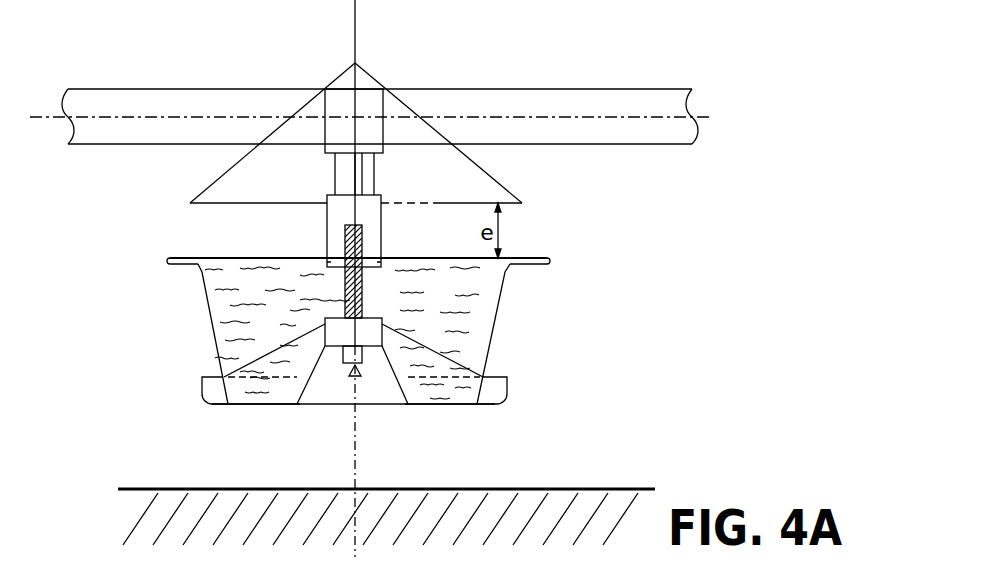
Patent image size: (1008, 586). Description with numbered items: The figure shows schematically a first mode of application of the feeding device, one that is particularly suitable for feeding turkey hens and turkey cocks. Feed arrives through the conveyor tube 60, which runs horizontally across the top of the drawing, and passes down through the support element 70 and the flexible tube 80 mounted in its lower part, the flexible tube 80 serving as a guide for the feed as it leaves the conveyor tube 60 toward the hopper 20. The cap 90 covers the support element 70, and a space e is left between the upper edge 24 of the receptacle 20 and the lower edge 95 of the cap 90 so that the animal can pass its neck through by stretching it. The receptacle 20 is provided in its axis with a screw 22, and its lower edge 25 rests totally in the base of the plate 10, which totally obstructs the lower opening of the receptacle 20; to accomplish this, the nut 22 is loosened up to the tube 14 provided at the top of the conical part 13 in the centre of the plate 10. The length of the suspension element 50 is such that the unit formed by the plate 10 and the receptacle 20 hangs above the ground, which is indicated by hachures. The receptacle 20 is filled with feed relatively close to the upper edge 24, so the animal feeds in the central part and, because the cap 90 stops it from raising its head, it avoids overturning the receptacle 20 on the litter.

The plate 10 is at (503, 393).
The conical part 13 is at (310, 388).
The tube 14 is at (363, 359).
The hopper 20 is at (497, 318).
The screw 22 is at (370, 330).
The upper edge 24 is at (176, 258).
The lower edge 25 is at (448, 405).
The suspension element 50 is at (338, 194).
The tube 60 is at (498, 106).
The support element 70 is at (365, 105).
The flexible tube 80 is at (327, 233).
The cap 90 is at (494, 177).
The lower edge 95 is at (446, 205).